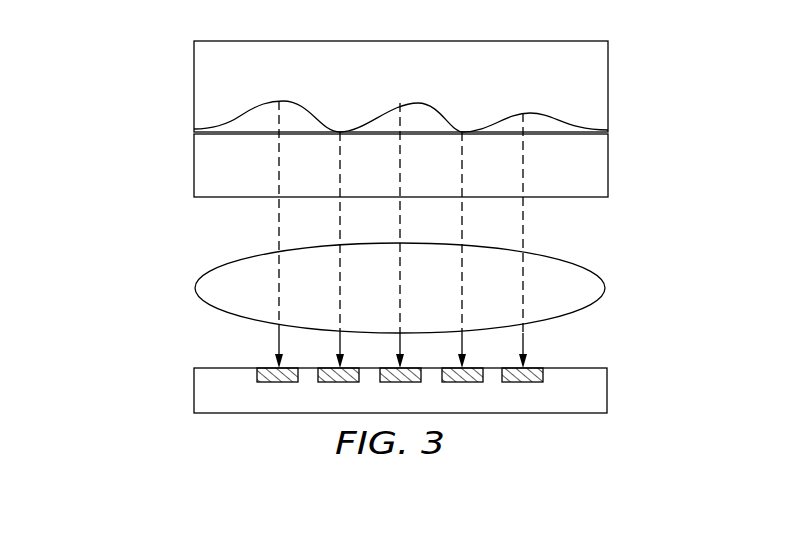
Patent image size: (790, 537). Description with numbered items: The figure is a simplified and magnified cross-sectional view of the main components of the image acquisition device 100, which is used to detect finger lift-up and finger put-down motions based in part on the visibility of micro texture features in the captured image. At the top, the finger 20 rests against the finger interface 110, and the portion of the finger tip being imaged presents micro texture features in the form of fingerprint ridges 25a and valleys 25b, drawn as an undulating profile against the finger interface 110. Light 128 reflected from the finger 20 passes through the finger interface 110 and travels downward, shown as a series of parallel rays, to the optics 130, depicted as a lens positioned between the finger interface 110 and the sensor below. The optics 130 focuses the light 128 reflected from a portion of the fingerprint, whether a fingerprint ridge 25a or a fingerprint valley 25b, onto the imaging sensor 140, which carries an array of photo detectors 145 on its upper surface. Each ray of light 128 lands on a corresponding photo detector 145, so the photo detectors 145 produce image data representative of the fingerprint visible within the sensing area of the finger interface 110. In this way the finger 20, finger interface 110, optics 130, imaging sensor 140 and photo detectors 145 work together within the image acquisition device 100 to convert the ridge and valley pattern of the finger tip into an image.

The image acquisition device 100 is at (124, 154).
The finger 20 is at (608, 72).
The ridge 25a is at (344, 122).
The valley 25b is at (254, 118).
The finger interface 110 is at (608, 159).
The light 128 is at (277, 232).
The optics 130 is at (606, 283).
The imaging sensor 140 is at (607, 382).
The photo detectors 145 is at (268, 367).